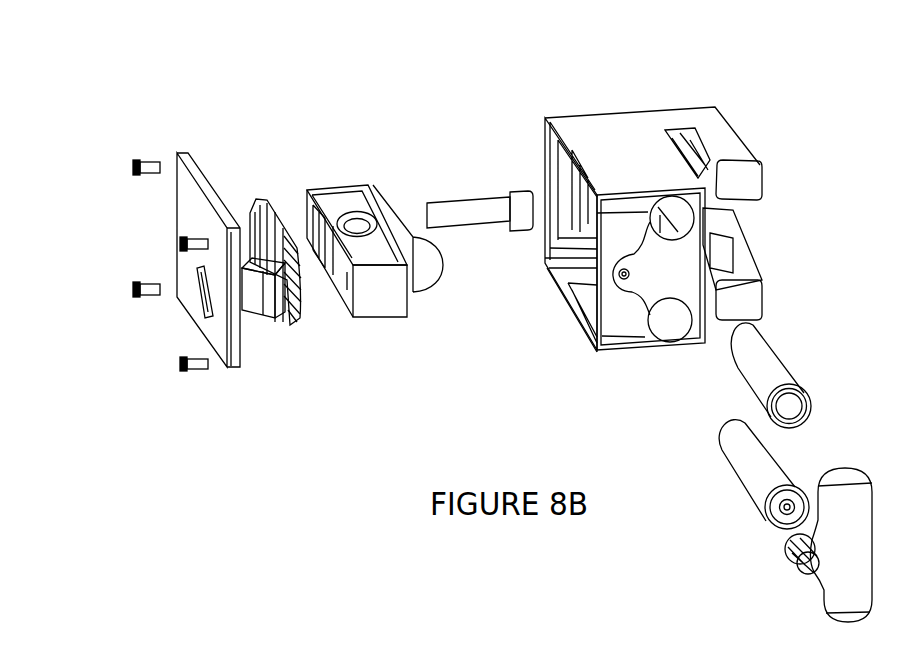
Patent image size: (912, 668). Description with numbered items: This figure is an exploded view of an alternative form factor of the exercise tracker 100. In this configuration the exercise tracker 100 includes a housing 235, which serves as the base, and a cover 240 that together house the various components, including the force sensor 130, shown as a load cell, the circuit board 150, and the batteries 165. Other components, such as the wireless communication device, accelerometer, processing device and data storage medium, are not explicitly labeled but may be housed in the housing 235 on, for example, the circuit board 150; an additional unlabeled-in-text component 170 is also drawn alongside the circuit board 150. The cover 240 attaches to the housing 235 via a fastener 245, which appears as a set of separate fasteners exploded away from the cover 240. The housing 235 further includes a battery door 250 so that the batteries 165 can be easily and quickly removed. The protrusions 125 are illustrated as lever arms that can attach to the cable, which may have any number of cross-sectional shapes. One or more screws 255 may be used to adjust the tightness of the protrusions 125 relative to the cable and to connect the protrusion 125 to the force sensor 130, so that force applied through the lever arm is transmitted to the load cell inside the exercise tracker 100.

The exercise tracker 100 is at (597, 64).
The protrusions 125 is at (379, 184).
The force sensor 130 is at (332, 186).
The circuit board 150 is at (292, 318).
The batteries 165 is at (747, 380).
The switch 170 is at (260, 315).
The housing 235 is at (591, 112).
The cover 240 is at (183, 152).
The fastener 245 is at (196, 357).
The battery door 250 is at (843, 623).
The screws 255 is at (468, 202).